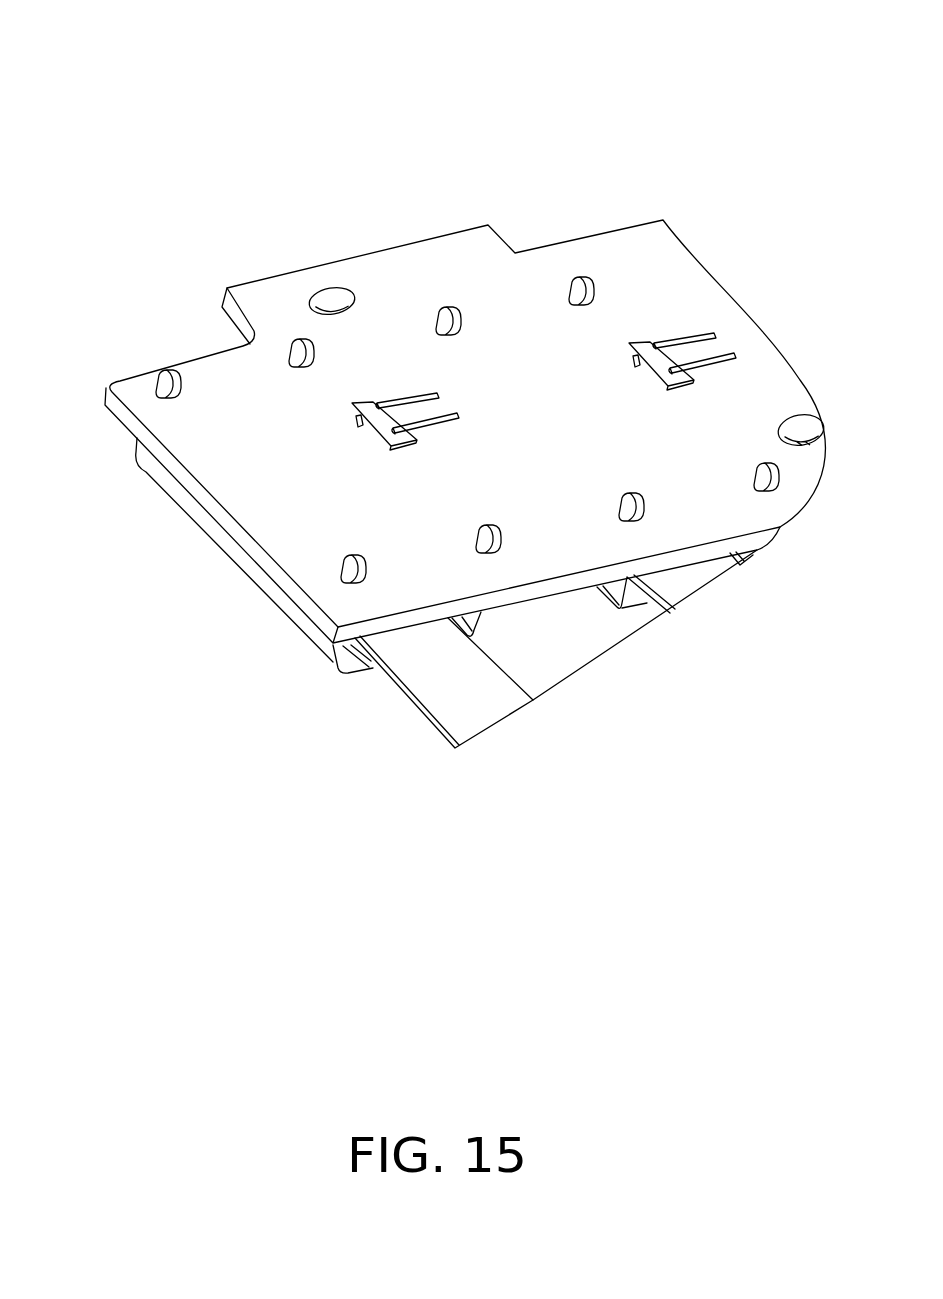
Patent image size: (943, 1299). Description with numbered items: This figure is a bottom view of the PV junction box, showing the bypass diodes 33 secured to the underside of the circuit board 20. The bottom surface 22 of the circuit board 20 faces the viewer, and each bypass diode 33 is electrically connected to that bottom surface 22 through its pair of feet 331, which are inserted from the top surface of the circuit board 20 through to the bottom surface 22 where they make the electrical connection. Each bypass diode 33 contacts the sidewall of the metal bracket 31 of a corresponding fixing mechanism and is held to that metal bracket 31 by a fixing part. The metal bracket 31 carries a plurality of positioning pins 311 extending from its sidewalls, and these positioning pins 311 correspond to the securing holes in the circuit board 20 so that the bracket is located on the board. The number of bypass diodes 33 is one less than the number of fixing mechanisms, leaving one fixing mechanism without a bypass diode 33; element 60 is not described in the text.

The circuit board 20 is at (393, 240).
The bottom surface 22 is at (248, 403).
The positioning pins 311 is at (582, 288).
The bypass diodes 33 is at (647, 343).
The feet 331 is at (726, 350).
The metal bracket 31 is at (295, 615).
The circuit board 60 is at (435, 682).